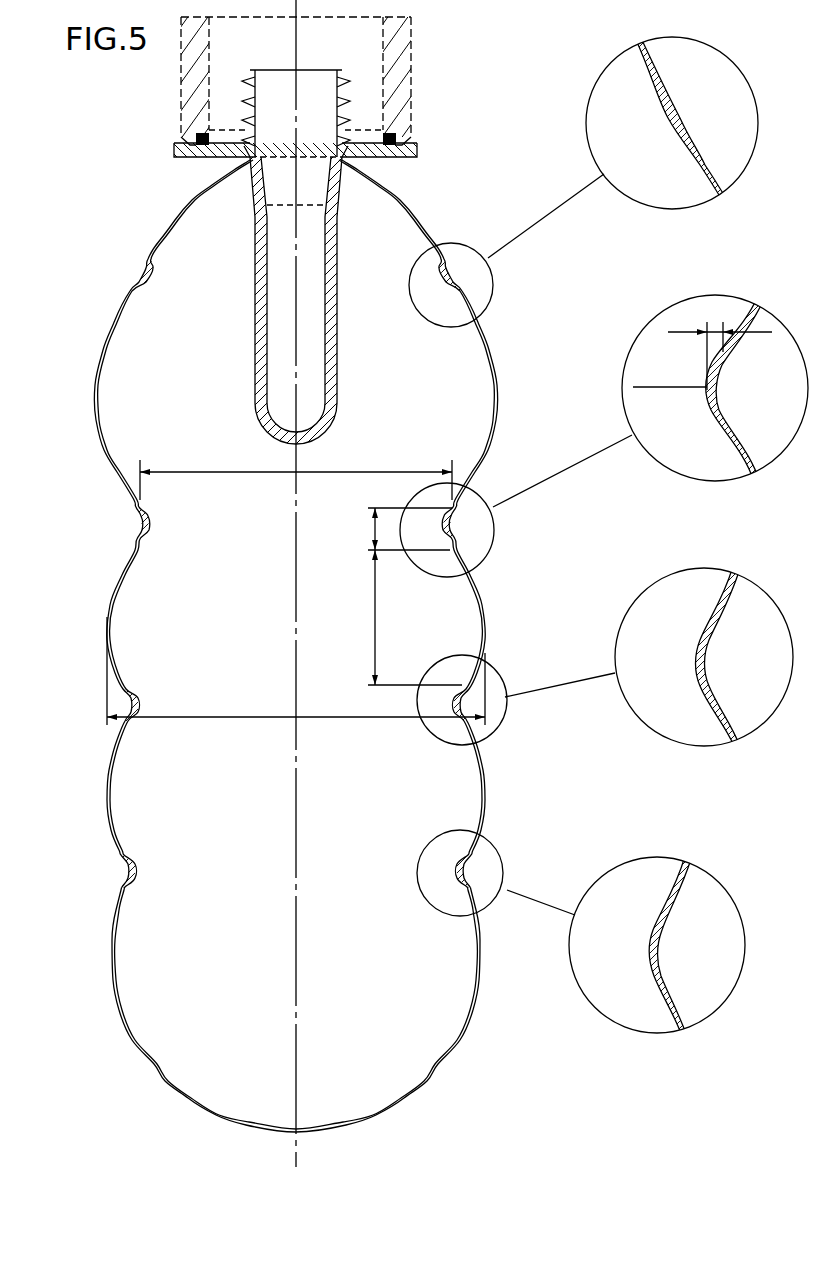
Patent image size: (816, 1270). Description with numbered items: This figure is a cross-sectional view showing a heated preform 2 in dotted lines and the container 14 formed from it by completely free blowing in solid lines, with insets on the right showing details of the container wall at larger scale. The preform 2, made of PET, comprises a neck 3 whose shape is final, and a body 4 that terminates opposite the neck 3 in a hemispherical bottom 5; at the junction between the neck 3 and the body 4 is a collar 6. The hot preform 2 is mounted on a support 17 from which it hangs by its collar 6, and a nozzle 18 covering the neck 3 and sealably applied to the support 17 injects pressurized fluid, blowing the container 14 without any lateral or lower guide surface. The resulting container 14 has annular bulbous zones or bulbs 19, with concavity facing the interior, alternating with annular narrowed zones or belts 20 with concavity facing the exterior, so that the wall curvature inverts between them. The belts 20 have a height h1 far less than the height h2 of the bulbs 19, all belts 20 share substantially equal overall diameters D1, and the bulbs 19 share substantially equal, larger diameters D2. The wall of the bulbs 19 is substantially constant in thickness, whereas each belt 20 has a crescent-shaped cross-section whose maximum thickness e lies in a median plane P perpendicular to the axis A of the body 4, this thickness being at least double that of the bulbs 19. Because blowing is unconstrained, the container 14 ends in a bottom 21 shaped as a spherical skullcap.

The preform 2 is at (253, 312).
The neck 3 is at (343, 91).
The body 4 is at (339, 270).
The hemispherical bottom 5 is at (315, 430).
The collar 6 is at (345, 153).
The container 14 is at (498, 361).
The support 17 is at (409, 161).
The nozzle 18 is at (408, 85).
The annular bulbous zones 19 is at (95, 380).
The annular narrowed zones 20 is at (146, 279).
The bottom 21 is at (438, 1064).
The axis A is at (297, 817).
The overall diameter of the belts D1 is at (296, 475).
The overall diameter of the bulbs D2 is at (296, 671).
The height of the belts h1 is at (401, 529).
The height of the bulbs h2 is at (406, 617).
The maximum thickness e is at (720, 349).
The median plane P is at (670, 387).